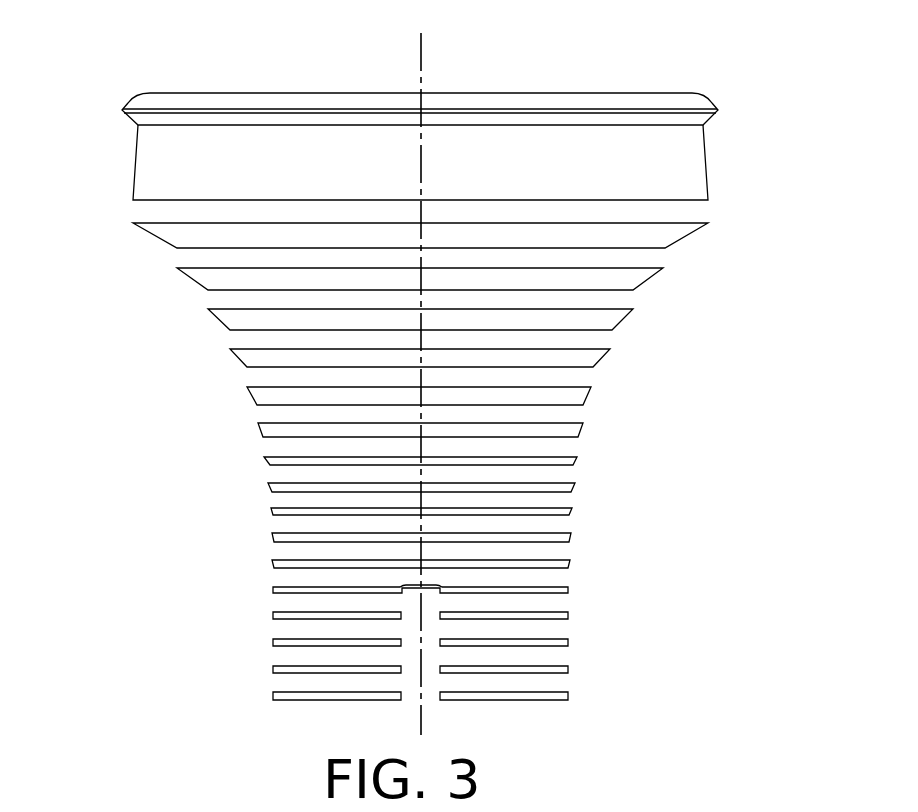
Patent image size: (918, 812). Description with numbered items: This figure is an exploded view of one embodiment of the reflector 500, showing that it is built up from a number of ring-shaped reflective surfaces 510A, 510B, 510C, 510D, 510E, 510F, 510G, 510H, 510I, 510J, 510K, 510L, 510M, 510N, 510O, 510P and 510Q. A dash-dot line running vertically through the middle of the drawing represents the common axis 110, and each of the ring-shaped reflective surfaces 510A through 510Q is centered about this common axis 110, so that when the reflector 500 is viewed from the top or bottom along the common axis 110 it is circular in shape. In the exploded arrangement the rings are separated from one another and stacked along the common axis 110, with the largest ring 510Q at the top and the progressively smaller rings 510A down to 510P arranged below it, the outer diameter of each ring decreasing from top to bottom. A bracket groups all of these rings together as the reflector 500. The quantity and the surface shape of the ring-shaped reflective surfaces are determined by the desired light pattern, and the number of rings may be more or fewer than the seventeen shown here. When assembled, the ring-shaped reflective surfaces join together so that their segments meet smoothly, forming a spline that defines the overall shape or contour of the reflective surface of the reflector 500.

The common axis 110 is at (421, 44).
The reflector 500 is at (103, 95).
The ring-shaped reflective surface 510Q is at (700, 160).
The ring-shaped reflective surface 510A is at (680, 236).
The ring-shaped reflective surface 510B is at (648, 280).
The ring-shaped reflective surface 510C is at (620, 320).
The ring-shaped reflective surface 510D is at (600, 358).
The ring-shaped reflective surface 510E is at (587, 398).
The ring-shaped reflective surface 510F is at (582, 432).
The ring-shaped reflective surface 510G is at (575, 460).
The ring-shaped reflective surface 510H is at (572, 487).
The ring-shaped reflective surface 510I is at (570, 510).
The ring-shaped reflective surface 510J is at (570, 537).
The ring-shaped reflective surface 510K is at (570, 563).
The ring-shaped reflective surface 510L is at (273, 590).
The ring-shaped reflective surface 510M is at (273, 616).
The ring-shaped reflective surface 510N is at (273, 642).
The ring-shaped reflective surface 510O is at (273, 669).
The ring-shaped reflective surface 510P is at (273, 696).